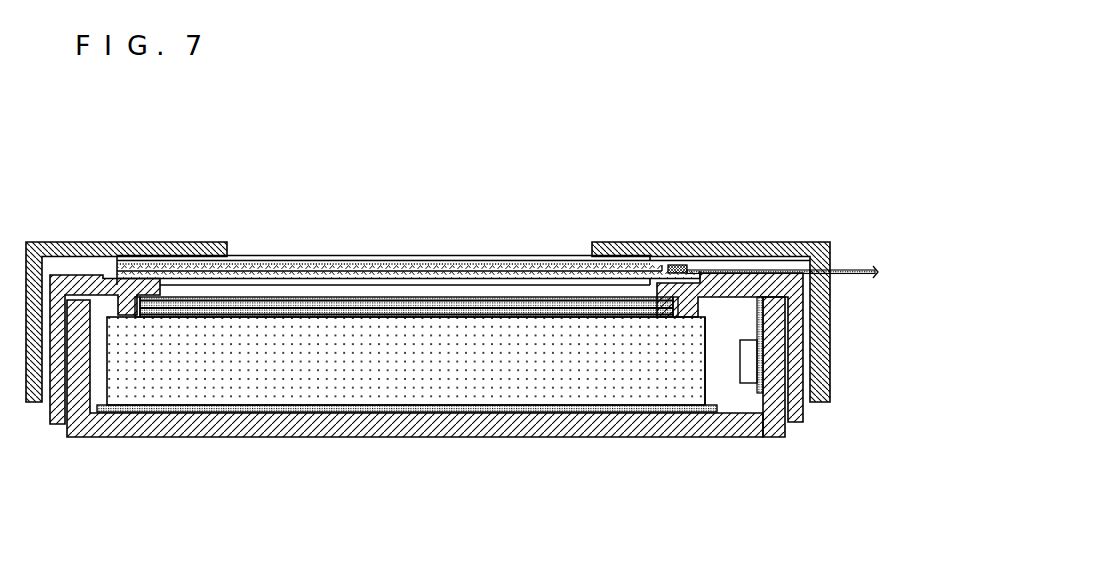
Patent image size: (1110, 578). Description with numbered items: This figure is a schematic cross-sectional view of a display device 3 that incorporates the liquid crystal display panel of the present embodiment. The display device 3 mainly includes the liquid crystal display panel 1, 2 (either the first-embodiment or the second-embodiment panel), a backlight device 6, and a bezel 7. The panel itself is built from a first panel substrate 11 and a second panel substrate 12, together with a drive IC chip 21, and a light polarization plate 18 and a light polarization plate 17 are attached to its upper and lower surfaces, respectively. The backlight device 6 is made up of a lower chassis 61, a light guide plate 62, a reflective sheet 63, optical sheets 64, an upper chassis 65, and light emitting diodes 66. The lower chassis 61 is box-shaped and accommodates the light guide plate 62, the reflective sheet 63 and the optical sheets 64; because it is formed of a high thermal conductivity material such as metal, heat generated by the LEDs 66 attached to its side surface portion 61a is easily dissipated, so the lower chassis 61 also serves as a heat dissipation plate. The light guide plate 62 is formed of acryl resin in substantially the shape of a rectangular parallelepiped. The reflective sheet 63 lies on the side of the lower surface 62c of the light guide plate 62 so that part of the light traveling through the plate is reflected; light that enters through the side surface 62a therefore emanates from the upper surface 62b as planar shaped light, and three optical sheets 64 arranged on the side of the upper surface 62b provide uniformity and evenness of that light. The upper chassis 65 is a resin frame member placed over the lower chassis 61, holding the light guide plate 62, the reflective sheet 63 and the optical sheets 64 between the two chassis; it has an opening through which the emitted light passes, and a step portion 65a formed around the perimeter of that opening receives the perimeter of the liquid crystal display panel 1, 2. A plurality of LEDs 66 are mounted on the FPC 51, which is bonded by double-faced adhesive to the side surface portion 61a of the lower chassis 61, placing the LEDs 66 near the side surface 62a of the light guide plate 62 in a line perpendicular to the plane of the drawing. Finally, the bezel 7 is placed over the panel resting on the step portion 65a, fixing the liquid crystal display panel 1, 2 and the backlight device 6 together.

The display device 3 is at (611, 152).
The liquid crystal display panel 1 is at (463, 223).
The liquid crystal display panel 2 is at (463, 231).
The backlight device 6 is at (142, 458).
The bezel 7 is at (95, 242).
The first panel substrate 11 is at (393, 278).
The second panel substrate 12 is at (537, 265).
The light polarization plate 17 is at (337, 287).
The light polarization plate 18 is at (480, 260).
The drive IC chip 21 is at (677, 265).
The FPC 51 is at (765, 317).
The lower chassis 61 is at (484, 396).
The side surface portion 61a is at (778, 372).
The light guide plate 62 is at (431, 356).
The side surface 62a is at (707, 345).
The upper surface 62b is at (406, 261).
The lower surface 62c is at (220, 412).
The reflective sheet 63 is at (357, 413).
The optical sheets 64 is at (197, 318).
The upper chassis 65 is at (780, 221).
The step portion 65a is at (707, 278).
The light emitting diodes 66 is at (752, 372).